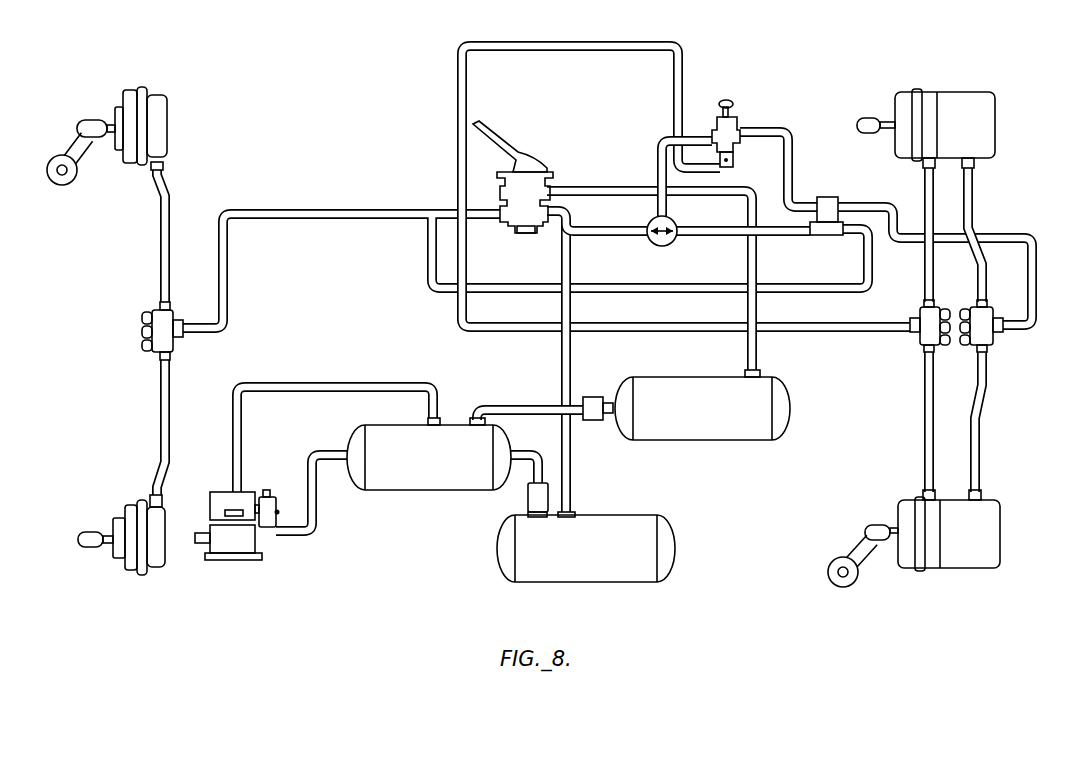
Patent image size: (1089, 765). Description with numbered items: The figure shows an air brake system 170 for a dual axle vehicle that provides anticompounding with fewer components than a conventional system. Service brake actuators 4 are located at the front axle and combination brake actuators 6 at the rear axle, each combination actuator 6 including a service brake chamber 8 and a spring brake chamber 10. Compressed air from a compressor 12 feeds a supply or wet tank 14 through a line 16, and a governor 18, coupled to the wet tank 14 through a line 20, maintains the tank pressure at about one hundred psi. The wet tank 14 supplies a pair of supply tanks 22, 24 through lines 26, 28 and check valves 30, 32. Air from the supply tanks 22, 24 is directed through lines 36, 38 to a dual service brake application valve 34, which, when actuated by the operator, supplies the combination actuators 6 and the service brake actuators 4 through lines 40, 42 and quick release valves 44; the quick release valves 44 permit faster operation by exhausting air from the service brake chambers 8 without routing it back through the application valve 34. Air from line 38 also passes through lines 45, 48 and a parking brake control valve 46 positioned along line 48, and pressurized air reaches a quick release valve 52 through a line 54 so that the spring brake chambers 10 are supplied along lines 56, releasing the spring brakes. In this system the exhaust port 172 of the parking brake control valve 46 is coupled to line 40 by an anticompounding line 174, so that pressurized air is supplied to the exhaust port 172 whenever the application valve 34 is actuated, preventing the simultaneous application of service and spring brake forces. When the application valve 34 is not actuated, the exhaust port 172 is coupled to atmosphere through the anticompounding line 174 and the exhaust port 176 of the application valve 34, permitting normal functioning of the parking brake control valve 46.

The service brake actuators 4 is at (198, 85).
The combination brake actuators 6 is at (1005, 68).
The service brake chamber 8 is at (152, 107).
The spring brake chamber 10 is at (980, 115).
The compressor 12 is at (235, 552).
The wet tank 14 is at (398, 450).
The line 16 is at (299, 386).
The governor 18 is at (290, 474).
The line 20 is at (308, 540).
The supply tank 22 is at (685, 405).
The supply tank 24 is at (610, 537).
The line 26 is at (496, 406).
The line 28 is at (526, 453).
The check valve 30 is at (591, 378).
The check valve 32 is at (528, 501).
The dual service brake application valve 34 is at (532, 164).
The line 36 is at (758, 355).
The line 38 is at (572, 318).
The line 40 is at (630, 330).
The line 42 is at (287, 212).
The quick release valve 44 is at (175, 344).
The line 45 is at (600, 233).
The parking brake control valve 46 is at (729, 128).
The line 48 is at (794, 165).
The quick release valve 52 is at (984, 335).
The line 54 is at (1038, 300).
The lines 56 is at (972, 213).
The air brake system 170 is at (122, 658).
The exhaust port 172 is at (730, 158).
The anticompounding line 174 is at (574, 47).
The exhaust port 176 is at (525, 234).